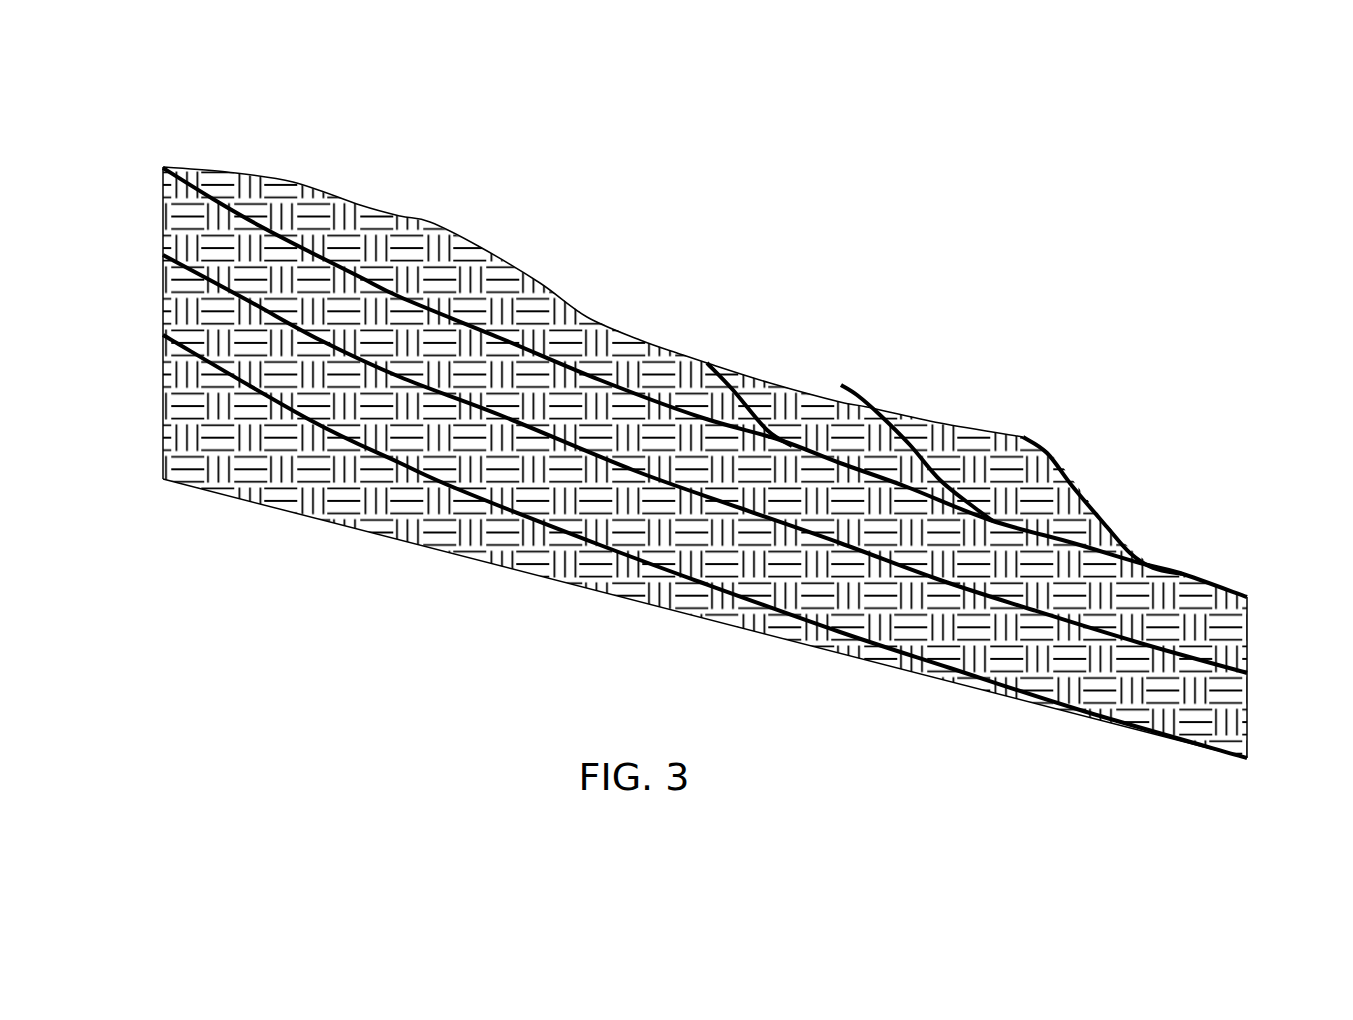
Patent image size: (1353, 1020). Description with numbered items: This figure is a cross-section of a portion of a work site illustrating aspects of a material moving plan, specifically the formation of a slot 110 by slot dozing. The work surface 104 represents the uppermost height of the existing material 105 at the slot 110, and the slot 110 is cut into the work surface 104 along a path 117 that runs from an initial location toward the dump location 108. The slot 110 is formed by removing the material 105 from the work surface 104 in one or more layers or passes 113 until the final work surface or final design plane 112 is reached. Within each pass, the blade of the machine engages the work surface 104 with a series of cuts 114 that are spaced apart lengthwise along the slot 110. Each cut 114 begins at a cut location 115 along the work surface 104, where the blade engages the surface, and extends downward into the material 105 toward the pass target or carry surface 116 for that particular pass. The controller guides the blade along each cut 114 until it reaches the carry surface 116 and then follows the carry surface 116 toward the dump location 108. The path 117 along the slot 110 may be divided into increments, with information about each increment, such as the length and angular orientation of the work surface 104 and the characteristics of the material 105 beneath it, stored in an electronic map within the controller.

The work surface 104 is at (432, 220).
The material 105 is at (302, 220).
The dump location 108 is at (1291, 584).
The slot 110 is at (1146, 457).
The final design plane 112 is at (263, 490).
The passes 113 is at (163, 330).
The cut 114 is at (740, 390).
The cut location 115 is at (708, 363).
The carry surface 116 is at (1247, 757).
The path 117 is at (641, 211).